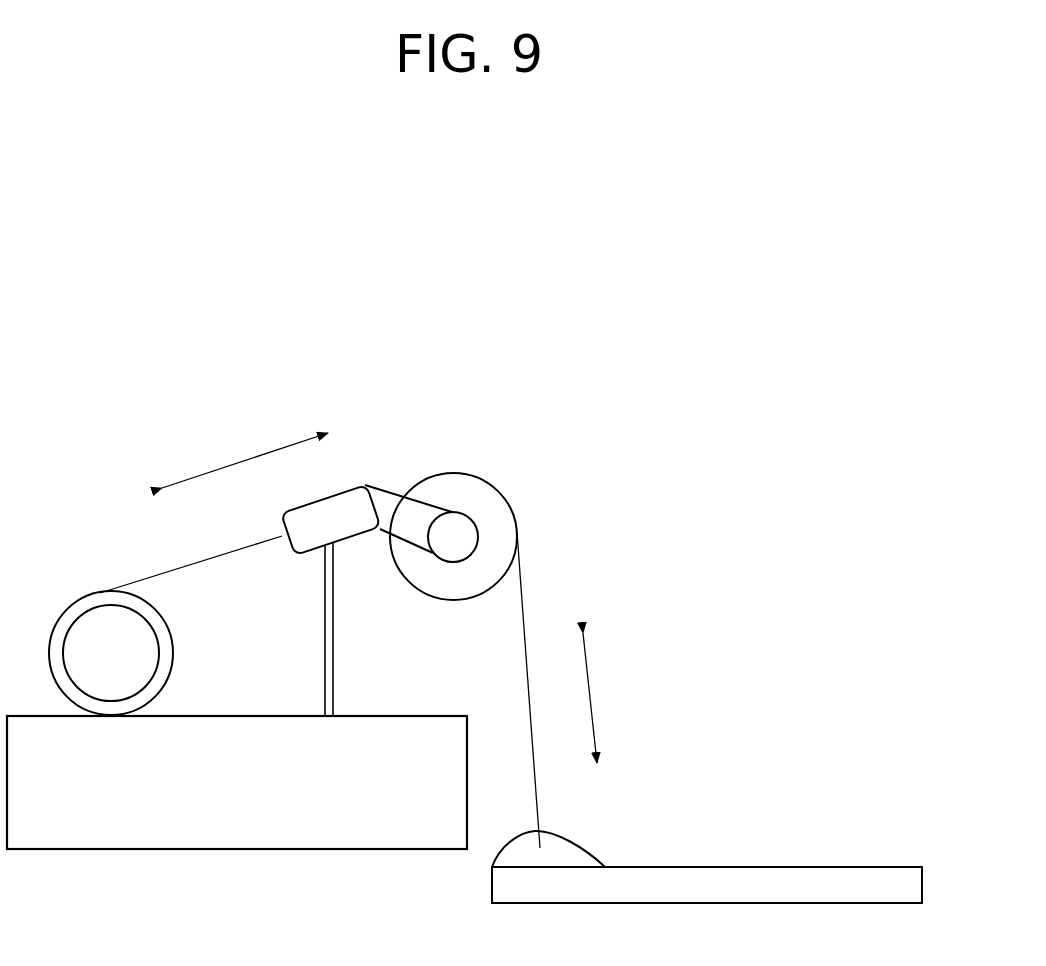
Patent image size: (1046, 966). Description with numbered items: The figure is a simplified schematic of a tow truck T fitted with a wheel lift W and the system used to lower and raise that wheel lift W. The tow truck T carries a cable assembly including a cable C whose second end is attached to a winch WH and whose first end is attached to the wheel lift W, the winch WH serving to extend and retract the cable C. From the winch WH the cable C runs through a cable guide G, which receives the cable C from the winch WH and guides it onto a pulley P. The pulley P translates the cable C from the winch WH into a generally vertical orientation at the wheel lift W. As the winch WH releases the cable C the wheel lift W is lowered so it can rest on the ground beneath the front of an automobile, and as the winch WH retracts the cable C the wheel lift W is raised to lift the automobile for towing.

The tow truck T is at (229, 867).
The winch WH is at (67, 592).
The cable guide G is at (345, 480).
The pulley P is at (503, 477).
The cable C is at (208, 558).
The wheel lift W is at (697, 845).